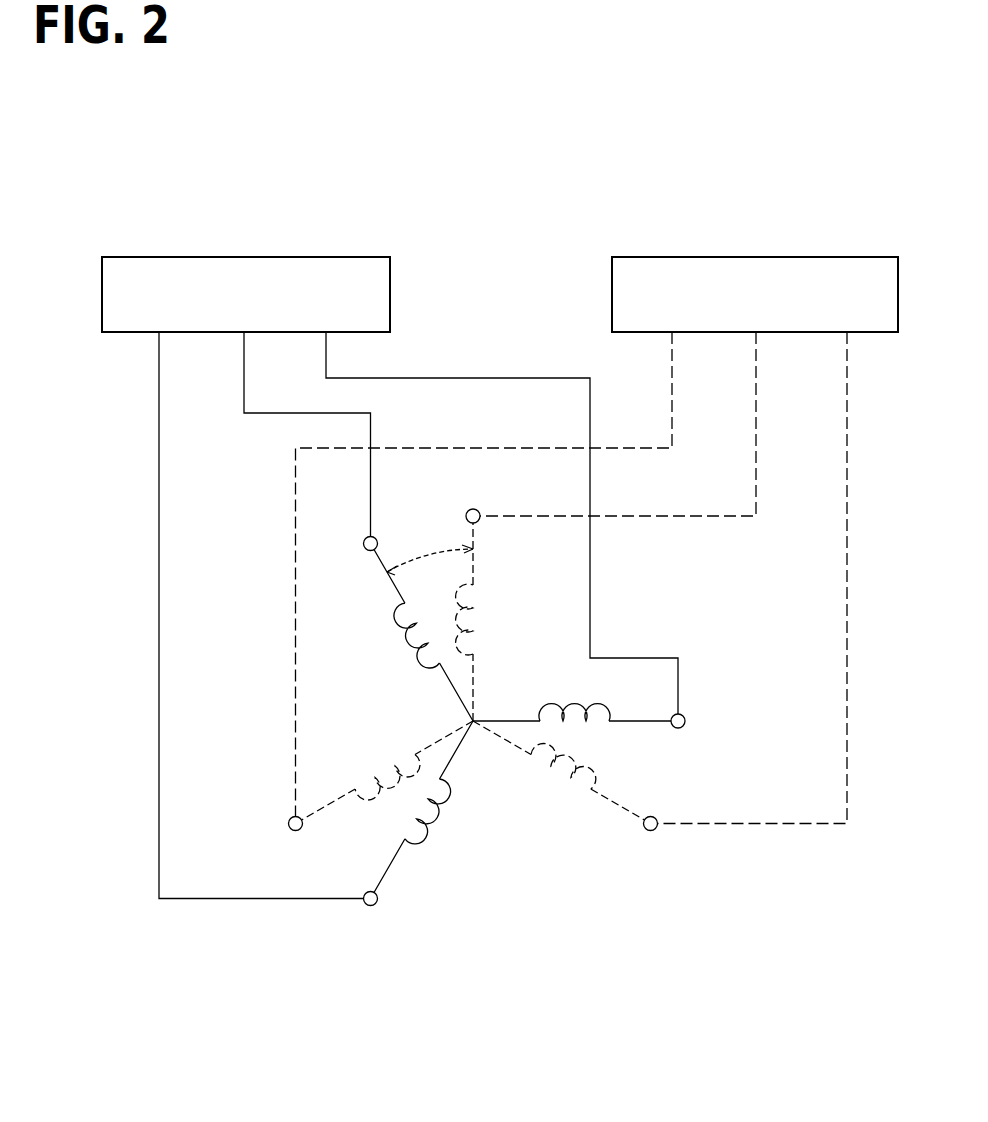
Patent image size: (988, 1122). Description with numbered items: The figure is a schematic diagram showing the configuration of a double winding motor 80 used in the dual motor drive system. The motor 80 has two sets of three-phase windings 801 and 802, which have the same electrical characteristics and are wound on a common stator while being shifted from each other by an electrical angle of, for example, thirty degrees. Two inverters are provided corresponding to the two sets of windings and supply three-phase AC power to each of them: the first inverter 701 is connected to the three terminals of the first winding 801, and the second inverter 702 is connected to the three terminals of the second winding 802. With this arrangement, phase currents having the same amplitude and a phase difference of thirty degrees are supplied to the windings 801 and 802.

The first inverter 701 is at (245, 257).
The second inverter 702 is at (757, 257).
The motor 80 is at (473, 708).
The first winding 801 is at (430, 632).
The second winding 802 is at (487, 622).